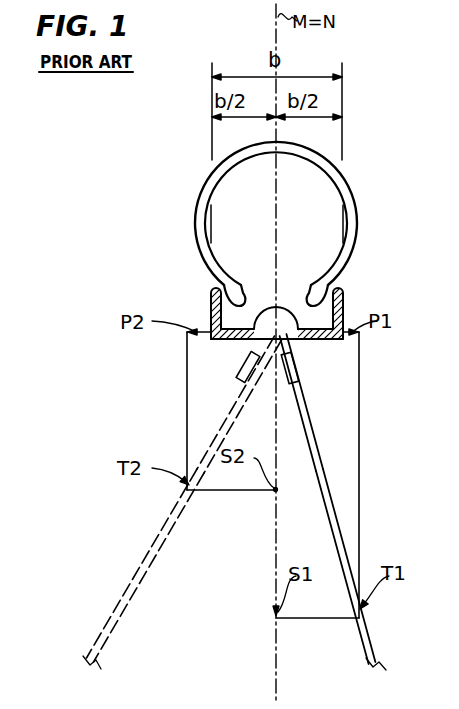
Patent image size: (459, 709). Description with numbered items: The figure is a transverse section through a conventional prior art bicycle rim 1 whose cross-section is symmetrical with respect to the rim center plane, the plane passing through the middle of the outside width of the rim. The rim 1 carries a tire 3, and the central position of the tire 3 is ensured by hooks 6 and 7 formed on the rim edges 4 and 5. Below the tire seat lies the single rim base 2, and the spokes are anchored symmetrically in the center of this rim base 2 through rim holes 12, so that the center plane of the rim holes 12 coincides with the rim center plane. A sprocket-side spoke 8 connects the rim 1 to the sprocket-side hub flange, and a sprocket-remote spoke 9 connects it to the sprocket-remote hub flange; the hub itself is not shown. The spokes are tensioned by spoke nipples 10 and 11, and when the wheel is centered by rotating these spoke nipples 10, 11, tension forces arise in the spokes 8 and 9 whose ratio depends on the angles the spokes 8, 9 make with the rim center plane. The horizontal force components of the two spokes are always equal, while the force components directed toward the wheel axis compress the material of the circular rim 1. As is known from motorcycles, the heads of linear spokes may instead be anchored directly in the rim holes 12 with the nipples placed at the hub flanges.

The rim 1 is at (146, 246).
The rim base 2 is at (272, 341).
The tire 3 is at (349, 176).
The rim edge 4 is at (345, 306).
The rim edge 5 is at (211, 306).
The hook 6 is at (320, 288).
The hook 7 is at (236, 288).
The sprocket-side spoke 8 is at (373, 640).
The sprocket-remote spoke 9 is at (130, 592).
The spoke nipple 10 is at (300, 362).
The spoke nipple 11 is at (240, 366).
The rim hole 12 is at (290, 339).